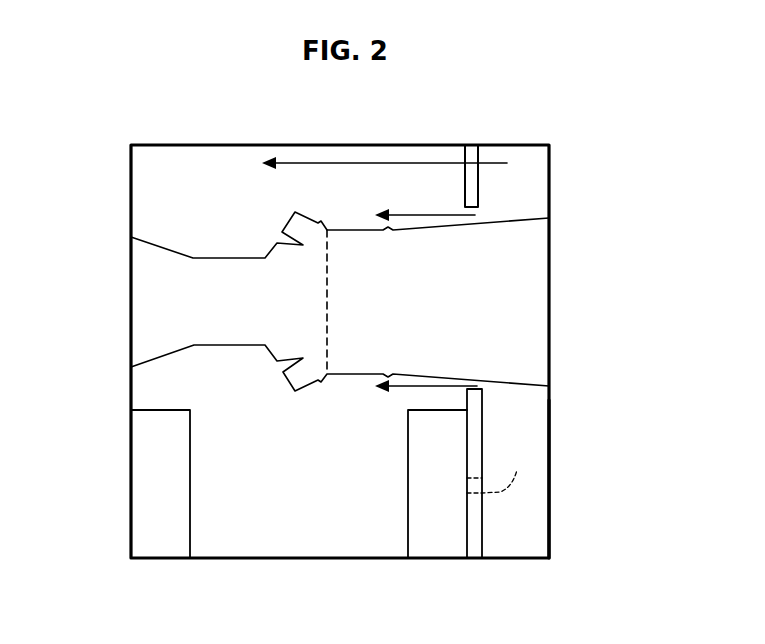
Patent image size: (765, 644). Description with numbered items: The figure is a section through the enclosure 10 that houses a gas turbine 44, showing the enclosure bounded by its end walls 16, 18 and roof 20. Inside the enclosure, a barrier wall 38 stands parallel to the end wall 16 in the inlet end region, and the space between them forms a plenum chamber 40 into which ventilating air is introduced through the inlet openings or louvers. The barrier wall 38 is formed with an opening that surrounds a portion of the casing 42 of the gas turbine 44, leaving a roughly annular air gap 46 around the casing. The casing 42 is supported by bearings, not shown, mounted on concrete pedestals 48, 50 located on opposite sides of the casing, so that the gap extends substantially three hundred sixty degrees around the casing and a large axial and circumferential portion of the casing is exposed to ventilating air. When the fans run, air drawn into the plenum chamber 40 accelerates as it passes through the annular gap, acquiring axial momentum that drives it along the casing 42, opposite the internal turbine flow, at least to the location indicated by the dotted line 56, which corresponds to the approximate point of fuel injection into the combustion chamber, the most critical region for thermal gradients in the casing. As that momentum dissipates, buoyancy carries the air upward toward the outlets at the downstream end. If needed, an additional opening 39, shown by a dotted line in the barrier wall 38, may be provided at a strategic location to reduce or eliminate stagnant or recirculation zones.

The enclosure 10 is at (588, 97).
The end wall 16 is at (551, 492).
The end wall 18 is at (129, 172).
The roof 20 is at (454, 144).
The barrier wall 38 is at (473, 525).
The additional opening 39 is at (501, 472).
The plenum chamber 40 is at (533, 193).
The casing 42 is at (345, 240).
The gas turbine 44 is at (337, 388).
The annular air gap 46 is at (475, 212).
The concrete pedestal 48 is at (173, 508).
The concrete pedestal 50 is at (418, 510).
The dotted line 56 is at (330, 333).